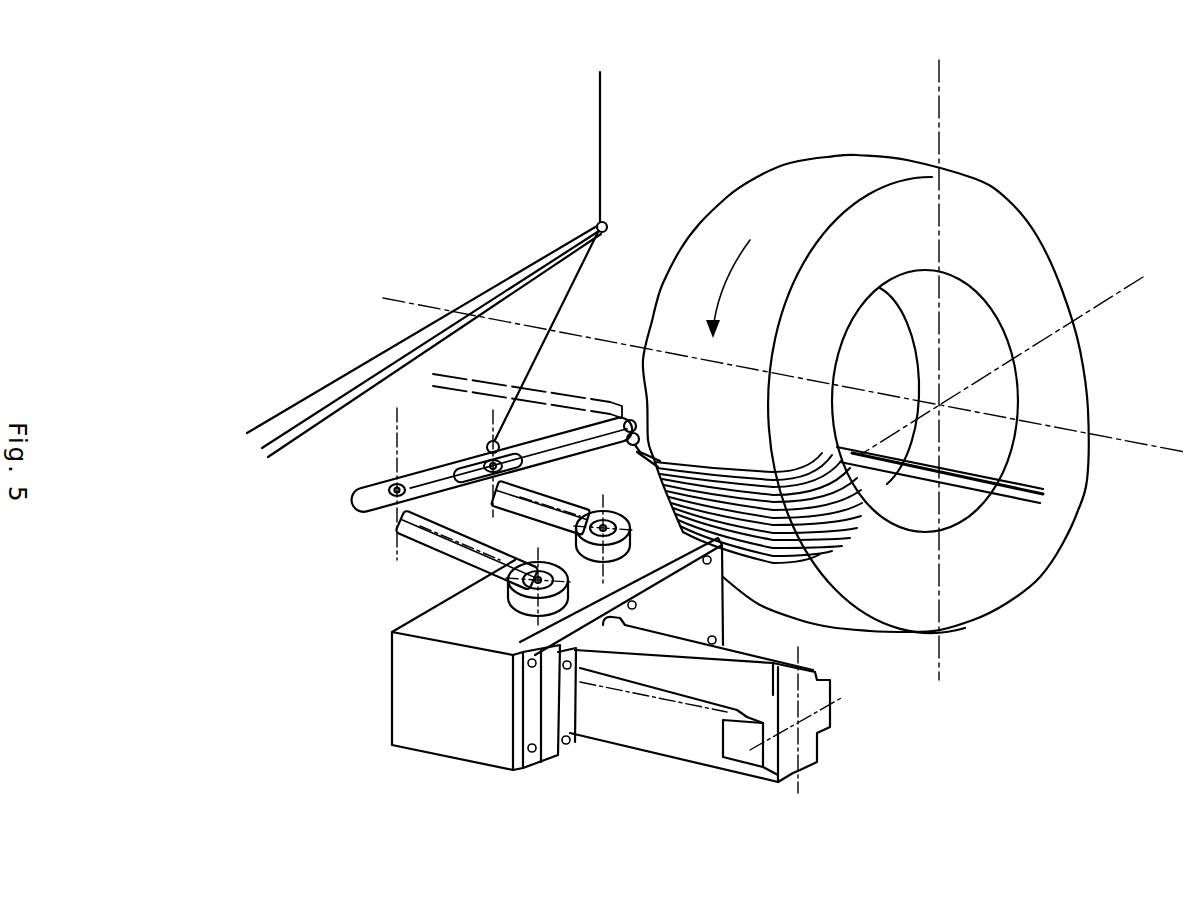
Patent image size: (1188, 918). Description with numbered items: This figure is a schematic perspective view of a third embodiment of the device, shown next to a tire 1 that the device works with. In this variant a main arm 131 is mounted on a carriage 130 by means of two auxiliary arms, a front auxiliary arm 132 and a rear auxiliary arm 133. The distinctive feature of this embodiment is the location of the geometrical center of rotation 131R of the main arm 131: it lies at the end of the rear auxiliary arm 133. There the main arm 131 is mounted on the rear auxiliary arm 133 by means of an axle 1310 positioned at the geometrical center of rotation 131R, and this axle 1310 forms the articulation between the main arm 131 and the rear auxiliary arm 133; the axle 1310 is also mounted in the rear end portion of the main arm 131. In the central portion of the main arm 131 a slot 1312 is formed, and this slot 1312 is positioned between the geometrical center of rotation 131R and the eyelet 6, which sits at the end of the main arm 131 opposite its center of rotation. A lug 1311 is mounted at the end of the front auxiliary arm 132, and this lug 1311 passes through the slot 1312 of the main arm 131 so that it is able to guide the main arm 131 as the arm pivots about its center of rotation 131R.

The tire 1 is at (827, 173).
The eyelet 6 is at (631, 420).
The geometrical center of rotation 131R is at (390, 423).
The lug 1311 is at (483, 455).
The slot 1312 is at (460, 467).
The axle 1310 is at (400, 527).
The main arm 131 is at (436, 497).
The rear auxiliary arm 133 is at (482, 533).
The front auxiliary arm 132 is at (580, 497).
The carriage 130 is at (413, 687).